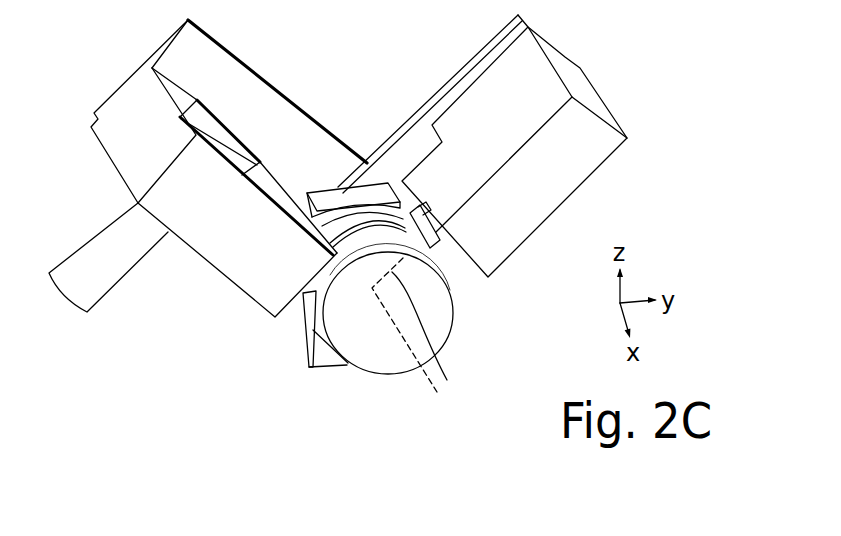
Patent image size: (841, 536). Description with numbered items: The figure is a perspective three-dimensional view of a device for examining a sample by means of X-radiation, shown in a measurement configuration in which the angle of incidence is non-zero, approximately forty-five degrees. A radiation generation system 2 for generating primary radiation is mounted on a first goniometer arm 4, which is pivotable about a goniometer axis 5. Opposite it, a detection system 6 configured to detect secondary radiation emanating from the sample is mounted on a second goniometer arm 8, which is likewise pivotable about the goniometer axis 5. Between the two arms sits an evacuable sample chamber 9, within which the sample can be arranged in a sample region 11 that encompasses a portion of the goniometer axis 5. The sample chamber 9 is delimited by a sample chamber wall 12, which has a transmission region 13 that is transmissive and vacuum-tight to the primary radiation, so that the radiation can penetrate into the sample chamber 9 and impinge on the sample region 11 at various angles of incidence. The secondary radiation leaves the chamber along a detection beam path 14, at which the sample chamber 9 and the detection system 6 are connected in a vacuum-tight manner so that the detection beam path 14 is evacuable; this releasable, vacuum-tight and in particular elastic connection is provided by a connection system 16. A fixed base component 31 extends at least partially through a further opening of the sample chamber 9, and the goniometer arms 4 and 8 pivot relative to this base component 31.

The radiation generation system 2 is at (186, 279).
The first goniometer arm 4 is at (245, 100).
The goniometer axis 5 is at (427, 382).
The detection system 6 is at (653, 141).
The second goniometer arm 8 is at (477, 78).
The sample chamber 9 is at (460, 343).
The sample region 11 is at (305, 352).
The sample chamber wall 12 is at (377, 357).
The transmission region 13 is at (370, 230).
The detection beam path 14 is at (447, 380).
The connection system 16 is at (452, 261).
The base component 31 is at (333, 197).